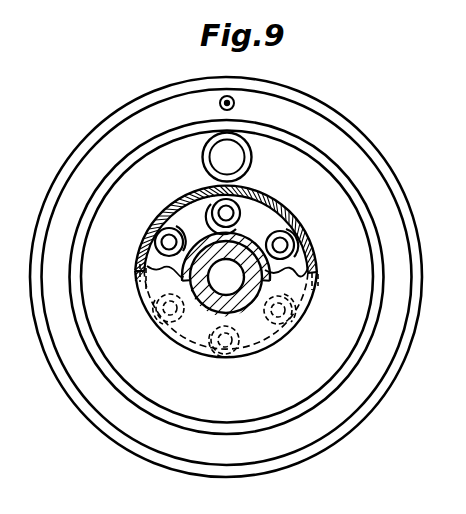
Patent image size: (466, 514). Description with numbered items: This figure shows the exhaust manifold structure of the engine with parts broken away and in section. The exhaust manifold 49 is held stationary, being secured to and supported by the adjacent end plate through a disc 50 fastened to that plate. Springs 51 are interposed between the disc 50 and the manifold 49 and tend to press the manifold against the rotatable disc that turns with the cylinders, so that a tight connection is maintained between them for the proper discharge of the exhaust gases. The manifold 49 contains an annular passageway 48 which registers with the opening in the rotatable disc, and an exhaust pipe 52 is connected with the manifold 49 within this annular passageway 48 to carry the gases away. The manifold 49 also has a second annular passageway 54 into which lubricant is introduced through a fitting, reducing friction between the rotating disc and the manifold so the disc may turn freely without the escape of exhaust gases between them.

The annular passageway 48 is at (364, 233).
The exhaust manifold 49 is at (416, 241).
The disc 50 is at (249, 166).
The springs 51 is at (196, 204).
The exhaust pipe 52 is at (269, 217).
The annular passageway 54 is at (317, 121).